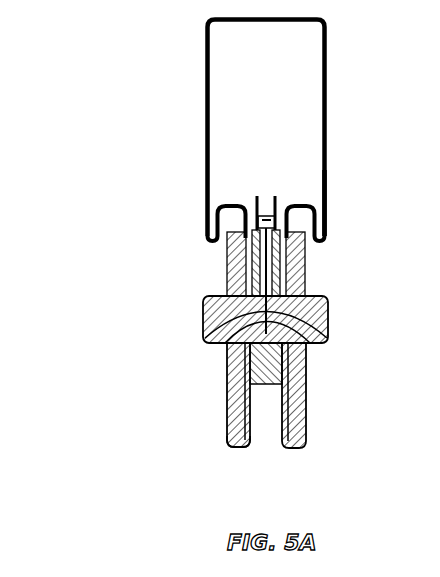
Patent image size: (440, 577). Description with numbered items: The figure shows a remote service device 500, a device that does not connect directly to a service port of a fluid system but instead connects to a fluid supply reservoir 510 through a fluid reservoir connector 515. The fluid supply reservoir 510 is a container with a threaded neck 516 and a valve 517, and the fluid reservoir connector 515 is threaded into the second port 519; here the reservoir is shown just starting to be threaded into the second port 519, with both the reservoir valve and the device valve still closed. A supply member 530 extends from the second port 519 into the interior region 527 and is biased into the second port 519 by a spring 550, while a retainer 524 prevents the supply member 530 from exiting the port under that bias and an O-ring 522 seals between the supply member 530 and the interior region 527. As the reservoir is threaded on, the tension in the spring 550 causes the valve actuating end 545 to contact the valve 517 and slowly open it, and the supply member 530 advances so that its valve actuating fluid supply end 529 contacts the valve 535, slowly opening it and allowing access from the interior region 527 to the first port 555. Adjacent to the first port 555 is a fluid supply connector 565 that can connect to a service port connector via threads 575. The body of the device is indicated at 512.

The remote service device 500 is at (85, 272).
The fluid supply reservoir 510 is at (327, 140).
The threaded neck 516 is at (327, 197).
The fluid reservoir connector 515 is at (330, 228).
The valve 517 is at (259, 197).
The valve actuating end 545 is at (232, 238).
The second port 519 is at (229, 266).
The supply member 530 is at (230, 287).
The retainer 524 is at (303, 262).
The O-ring 522 is at (298, 273).
The base body 512 is at (340, 311).
The interior region 527 is at (210, 340).
The spring 550 is at (324, 338).
The first port 555 is at (234, 404).
The valve 535 is at (232, 355).
The threads 575 is at (231, 442).
The fluid supply connector 565 is at (298, 452).
The valve actuating fluid supply end 529 is at (308, 352).